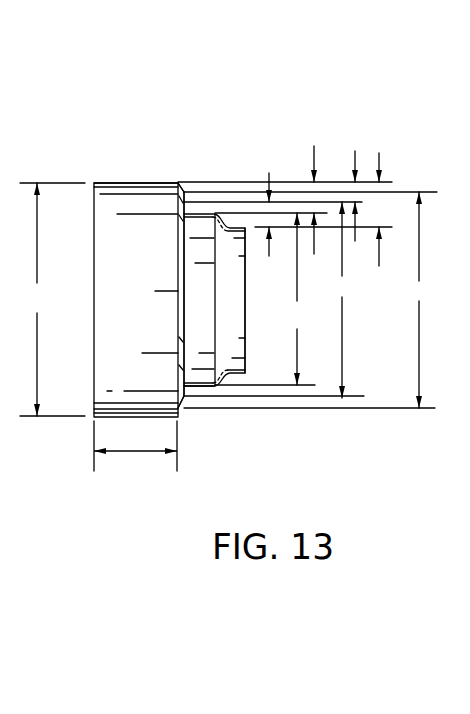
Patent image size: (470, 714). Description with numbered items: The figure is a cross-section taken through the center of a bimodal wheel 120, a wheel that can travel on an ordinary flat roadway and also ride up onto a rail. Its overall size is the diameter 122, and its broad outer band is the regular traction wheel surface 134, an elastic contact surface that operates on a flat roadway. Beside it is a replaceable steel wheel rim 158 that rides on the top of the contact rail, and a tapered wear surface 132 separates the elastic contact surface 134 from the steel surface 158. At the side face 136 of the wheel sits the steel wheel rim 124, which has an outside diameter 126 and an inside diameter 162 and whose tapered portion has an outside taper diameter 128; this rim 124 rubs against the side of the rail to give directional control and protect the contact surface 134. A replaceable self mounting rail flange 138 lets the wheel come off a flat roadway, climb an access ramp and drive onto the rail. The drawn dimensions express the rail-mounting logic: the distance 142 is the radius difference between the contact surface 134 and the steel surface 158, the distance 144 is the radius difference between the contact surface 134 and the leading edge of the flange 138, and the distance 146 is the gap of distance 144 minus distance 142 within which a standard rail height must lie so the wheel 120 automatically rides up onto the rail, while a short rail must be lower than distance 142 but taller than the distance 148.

The bimodal wheel 120 is at (170, 142).
The diameter 122 is at (152, 500).
The wheel rim 124 is at (181, 205).
The outside diameter 126 is at (274, 300).
The outside taper diameter 128 is at (307, 295).
The tapered wear surface 132 is at (180, 397).
The traction wheel surface 134 is at (110, 184).
The side face 136 is at (177, 182).
The self mounting rail flange 138 is at (232, 232).
The distance 142 is at (312, 146).
The distance 144 is at (377, 152).
The distance 146 is at (267, 173).
The distance 148 is at (353, 151).
The replaceable steel wheel rim 158 is at (203, 387).
The inside diameter 162 is at (271, 299).